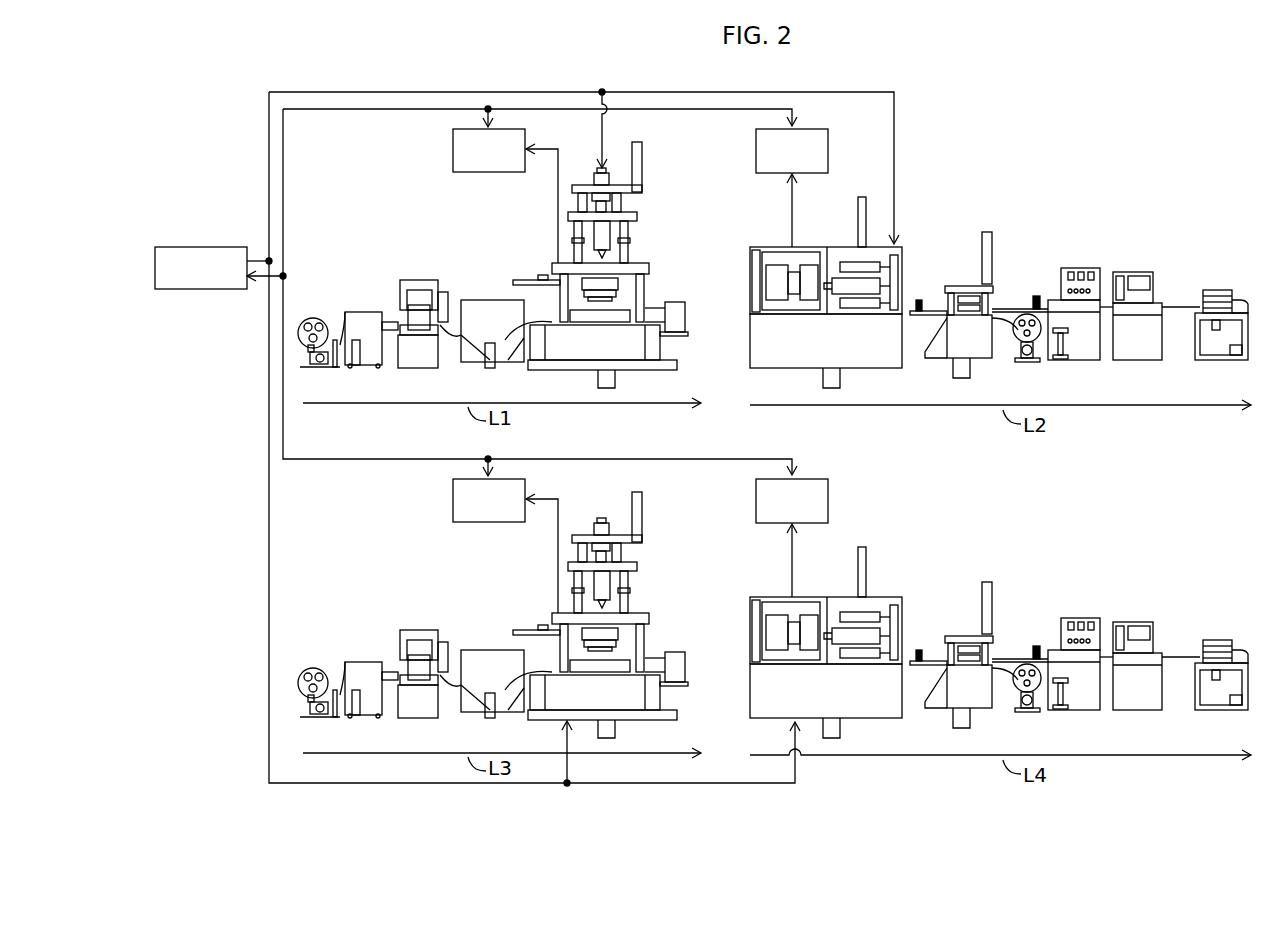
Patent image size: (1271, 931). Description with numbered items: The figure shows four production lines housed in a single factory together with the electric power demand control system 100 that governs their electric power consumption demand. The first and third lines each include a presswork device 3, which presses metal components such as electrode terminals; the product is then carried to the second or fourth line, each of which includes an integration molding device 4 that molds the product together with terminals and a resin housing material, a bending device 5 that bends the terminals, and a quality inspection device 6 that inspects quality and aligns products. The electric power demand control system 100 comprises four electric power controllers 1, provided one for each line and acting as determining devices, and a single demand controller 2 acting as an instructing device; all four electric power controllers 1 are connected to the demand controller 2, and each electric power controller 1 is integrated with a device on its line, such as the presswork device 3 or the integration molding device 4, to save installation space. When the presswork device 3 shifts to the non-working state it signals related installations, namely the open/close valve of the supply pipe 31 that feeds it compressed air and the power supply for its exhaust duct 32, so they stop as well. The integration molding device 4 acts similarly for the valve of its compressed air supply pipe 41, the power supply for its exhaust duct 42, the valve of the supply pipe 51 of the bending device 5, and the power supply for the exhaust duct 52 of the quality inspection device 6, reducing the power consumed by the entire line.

The electric power demand control system 100 is at (1183, 148).
The electric power controller 1 is at (452, 148).
The demand controller 2 is at (183, 248).
The presswork device 3 is at (518, 283).
The supply pipe 31 is at (644, 178).
The exhaust duct 32 is at (617, 383).
The integration molding device 4 is at (758, 247).
The supply pipe 41 is at (858, 200).
The exhaust duct 42 is at (842, 383).
The bending device 5 is at (951, 284).
The supply pipe 51 is at (987, 232).
The exhaust duct 52 is at (972, 377).
The quality inspection device 6 is at (1078, 268).